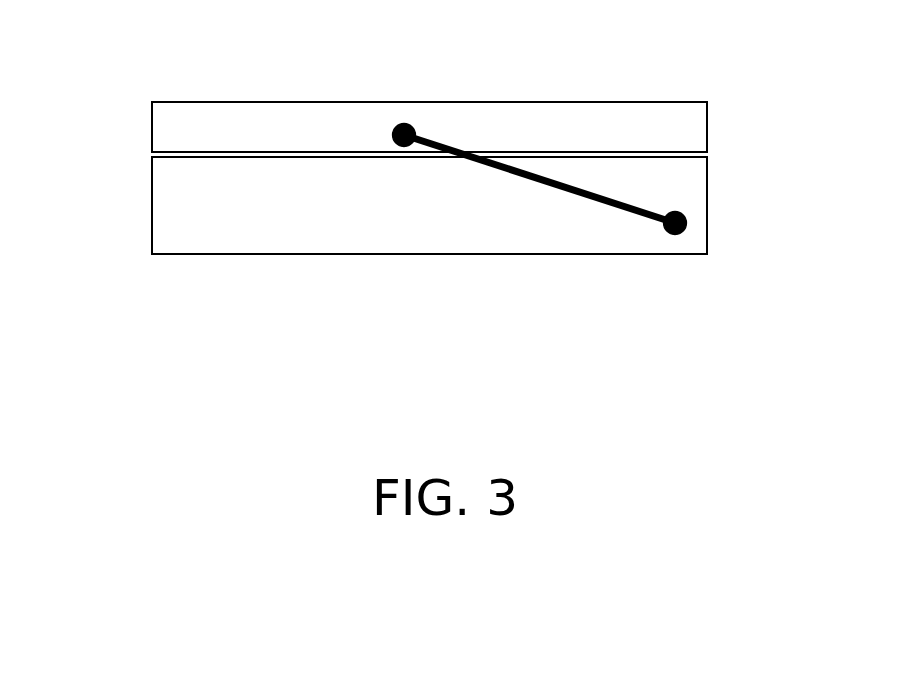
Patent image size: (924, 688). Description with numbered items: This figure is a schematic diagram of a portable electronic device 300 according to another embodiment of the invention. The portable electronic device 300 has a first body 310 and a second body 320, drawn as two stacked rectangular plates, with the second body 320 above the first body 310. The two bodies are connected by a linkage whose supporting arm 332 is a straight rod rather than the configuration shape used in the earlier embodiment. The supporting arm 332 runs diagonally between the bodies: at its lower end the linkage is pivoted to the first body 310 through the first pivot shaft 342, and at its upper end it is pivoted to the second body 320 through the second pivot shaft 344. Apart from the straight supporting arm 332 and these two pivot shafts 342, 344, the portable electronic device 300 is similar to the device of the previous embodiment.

The portable electronic device 300 is at (509, 208).
The first body 310 is at (688, 189).
The second body 320 is at (686, 121).
The supporting arm 332 is at (567, 183).
The first pivot shaft 342 is at (688, 222).
The second pivot shaft 344 is at (409, 124).